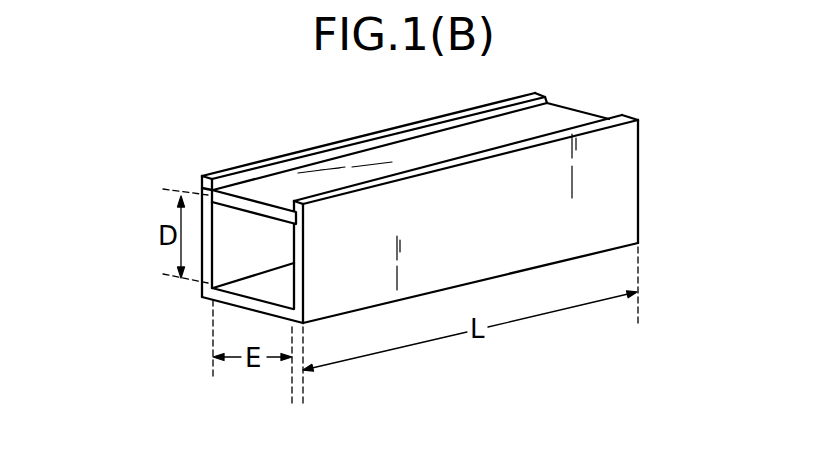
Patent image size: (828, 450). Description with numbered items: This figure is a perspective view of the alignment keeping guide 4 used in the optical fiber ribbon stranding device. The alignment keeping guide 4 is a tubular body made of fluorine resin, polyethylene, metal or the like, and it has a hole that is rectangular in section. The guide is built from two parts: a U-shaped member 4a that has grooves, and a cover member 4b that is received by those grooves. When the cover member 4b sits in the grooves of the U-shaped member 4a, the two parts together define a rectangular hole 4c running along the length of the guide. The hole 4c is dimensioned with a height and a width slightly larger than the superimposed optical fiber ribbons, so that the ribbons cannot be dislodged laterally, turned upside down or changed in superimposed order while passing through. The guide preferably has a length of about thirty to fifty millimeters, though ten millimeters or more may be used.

The alignment keeping guide 4 is at (366, 261).
The U-shaped member 4a is at (212, 296).
The cover member 4b is at (245, 205).
The rectangular hole 4c is at (251, 258).